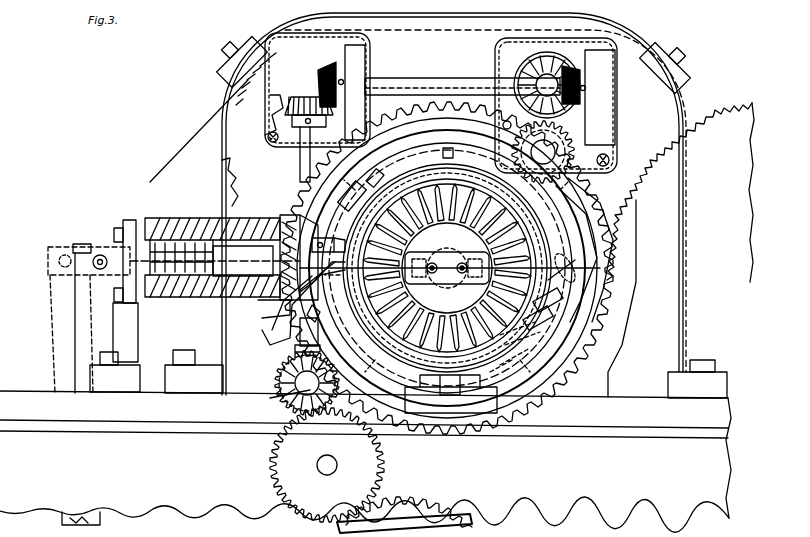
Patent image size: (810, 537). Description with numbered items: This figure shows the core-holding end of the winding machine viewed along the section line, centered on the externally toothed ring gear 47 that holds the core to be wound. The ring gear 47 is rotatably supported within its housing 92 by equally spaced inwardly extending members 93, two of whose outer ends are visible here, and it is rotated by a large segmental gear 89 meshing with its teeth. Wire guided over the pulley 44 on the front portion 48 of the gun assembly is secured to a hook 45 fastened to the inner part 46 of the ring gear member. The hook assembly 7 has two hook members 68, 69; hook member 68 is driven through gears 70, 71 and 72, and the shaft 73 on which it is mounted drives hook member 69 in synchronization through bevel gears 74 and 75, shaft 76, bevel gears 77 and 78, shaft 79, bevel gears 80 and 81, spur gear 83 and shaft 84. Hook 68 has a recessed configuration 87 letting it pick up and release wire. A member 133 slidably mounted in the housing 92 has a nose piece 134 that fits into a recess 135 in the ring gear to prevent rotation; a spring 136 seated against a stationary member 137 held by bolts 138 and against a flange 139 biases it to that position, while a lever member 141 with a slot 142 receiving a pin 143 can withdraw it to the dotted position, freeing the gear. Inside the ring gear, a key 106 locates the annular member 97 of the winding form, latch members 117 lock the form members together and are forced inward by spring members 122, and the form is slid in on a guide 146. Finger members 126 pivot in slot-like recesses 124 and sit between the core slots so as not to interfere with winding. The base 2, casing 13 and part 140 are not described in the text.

The base 2 is at (40, 508).
The hook assembly 7 is at (274, 312).
The casing 13 is at (290, 150).
The pulley 44 is at (460, 282).
The hook 45 is at (322, 306).
The inner part of ring gear member 46 is at (318, 238).
The ring gear 47 is at (582, 376).
The front portion 48 is at (447, 256).
The hook member 68 is at (575, 270).
The hook member 69 is at (568, 208).
The gear 70 is at (432, 505).
The gear 71 is at (272, 468).
The gear 72 is at (280, 405).
The shaft 73 is at (268, 398).
The bevel gear 74 is at (275, 378).
The bevel gear 75 is at (290, 362).
The shaft 76 is at (318, 330).
The bevel gear 77 is at (302, 100).
The bevel gear 78 is at (326, 70).
The shaft 79 is at (430, 79).
The bevel gear 80 is at (578, 80).
The bevel gear 81 is at (566, 68).
The spur gear 83 is at (562, 140).
The shaft 84 is at (540, 150).
The recessed configuration 87 is at (314, 282).
The segmental gear 89 is at (718, 124).
The housing 92 is at (528, 64).
The inwardly extending member 93 is at (230, 62).
The annular member 97 is at (472, 150).
The key 106 is at (448, 148).
The latch member 117 is at (368, 200).
The spring member 122 is at (354, 186).
The slot-like recess 124 is at (522, 360).
The finger member 126 is at (542, 326).
The member 133 is at (220, 182).
The nose piece 134 is at (272, 240).
The recess 135 is at (312, 255).
The spring 136 is at (178, 218).
The stationary member 137 is at (118, 227).
The bolt 138 is at (130, 218).
The flange 139 is at (213, 216).
The shaft 140 is at (250, 246).
The lever member 141 is at (85, 305).
The slot 142 is at (98, 244).
The pin 143 is at (50, 268).
The guide 146 is at (485, 403).